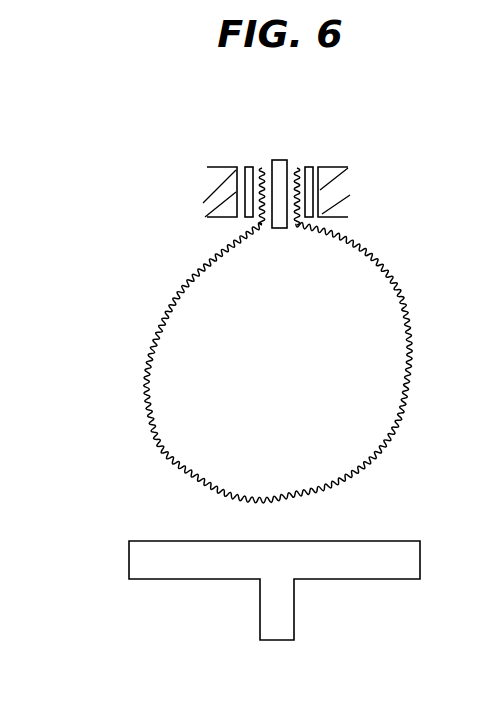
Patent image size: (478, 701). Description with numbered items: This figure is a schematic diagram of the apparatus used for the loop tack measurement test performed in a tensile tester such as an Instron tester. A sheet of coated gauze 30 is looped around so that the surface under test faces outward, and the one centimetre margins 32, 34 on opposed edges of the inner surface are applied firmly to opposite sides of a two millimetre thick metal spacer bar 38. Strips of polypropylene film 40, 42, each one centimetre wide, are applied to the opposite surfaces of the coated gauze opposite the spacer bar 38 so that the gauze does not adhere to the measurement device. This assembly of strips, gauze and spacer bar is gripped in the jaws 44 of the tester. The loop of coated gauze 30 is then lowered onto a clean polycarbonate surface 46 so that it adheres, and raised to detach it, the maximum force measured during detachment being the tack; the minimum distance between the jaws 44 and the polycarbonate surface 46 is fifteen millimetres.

The sheet of coated gauze 30 is at (285, 503).
The margin 32 is at (252, 178).
The margin 34 is at (303, 198).
The metal spacer bar 38 is at (283, 158).
The strip of polypropylene film 40 is at (253, 200).
The strip of polypropylene film 42 is at (300, 197).
The jaws 44 is at (212, 165).
The polycarbonate surface 46 is at (167, 540).